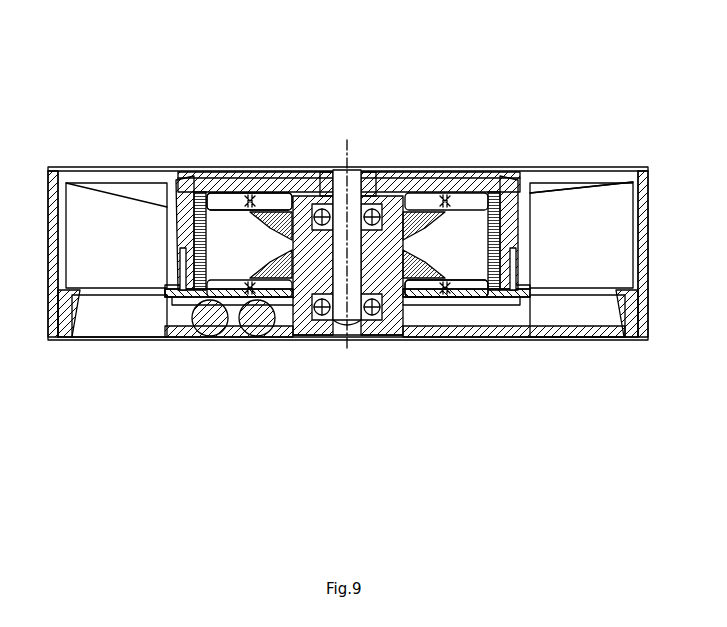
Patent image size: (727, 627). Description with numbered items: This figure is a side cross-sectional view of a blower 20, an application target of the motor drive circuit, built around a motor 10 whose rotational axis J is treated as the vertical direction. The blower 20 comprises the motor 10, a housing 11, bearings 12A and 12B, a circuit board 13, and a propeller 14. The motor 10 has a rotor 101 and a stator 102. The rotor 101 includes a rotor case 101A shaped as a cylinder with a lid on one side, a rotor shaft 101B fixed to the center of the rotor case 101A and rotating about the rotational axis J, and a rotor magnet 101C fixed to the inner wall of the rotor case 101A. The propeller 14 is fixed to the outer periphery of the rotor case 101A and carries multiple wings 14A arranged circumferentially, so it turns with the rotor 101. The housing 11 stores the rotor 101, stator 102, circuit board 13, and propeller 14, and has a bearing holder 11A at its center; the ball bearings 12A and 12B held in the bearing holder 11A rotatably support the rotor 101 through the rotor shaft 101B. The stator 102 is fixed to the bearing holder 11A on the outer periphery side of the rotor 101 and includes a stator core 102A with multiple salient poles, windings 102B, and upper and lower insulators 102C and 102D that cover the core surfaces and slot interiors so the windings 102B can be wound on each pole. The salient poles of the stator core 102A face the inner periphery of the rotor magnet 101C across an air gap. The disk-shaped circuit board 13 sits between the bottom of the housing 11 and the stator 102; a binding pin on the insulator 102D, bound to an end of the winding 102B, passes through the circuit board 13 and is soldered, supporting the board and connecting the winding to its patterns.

The motor 10 is at (436, 168).
The housing 11 is at (648, 171).
The bearing holder 11A is at (297, 340).
The bearing 12A is at (402, 170).
The bearing 12B is at (383, 340).
The circuit board 13 is at (452, 340).
The propeller 14 is at (545, 192).
The wings 14A is at (608, 200).
The blower 20 is at (484, 100).
The rotor 101 is at (387, 170).
The rotor case 101A is at (518, 170).
The rotor shaft 101B is at (356, 170).
The rotor magnet 101C is at (206, 168).
The stator 102 is at (468, 170).
The stator core 102A is at (274, 170).
The windings 102B is at (236, 168).
The insulator 102C is at (489, 170).
The insulator 102D is at (496, 340).
The rotational axis J is at (343, 141).